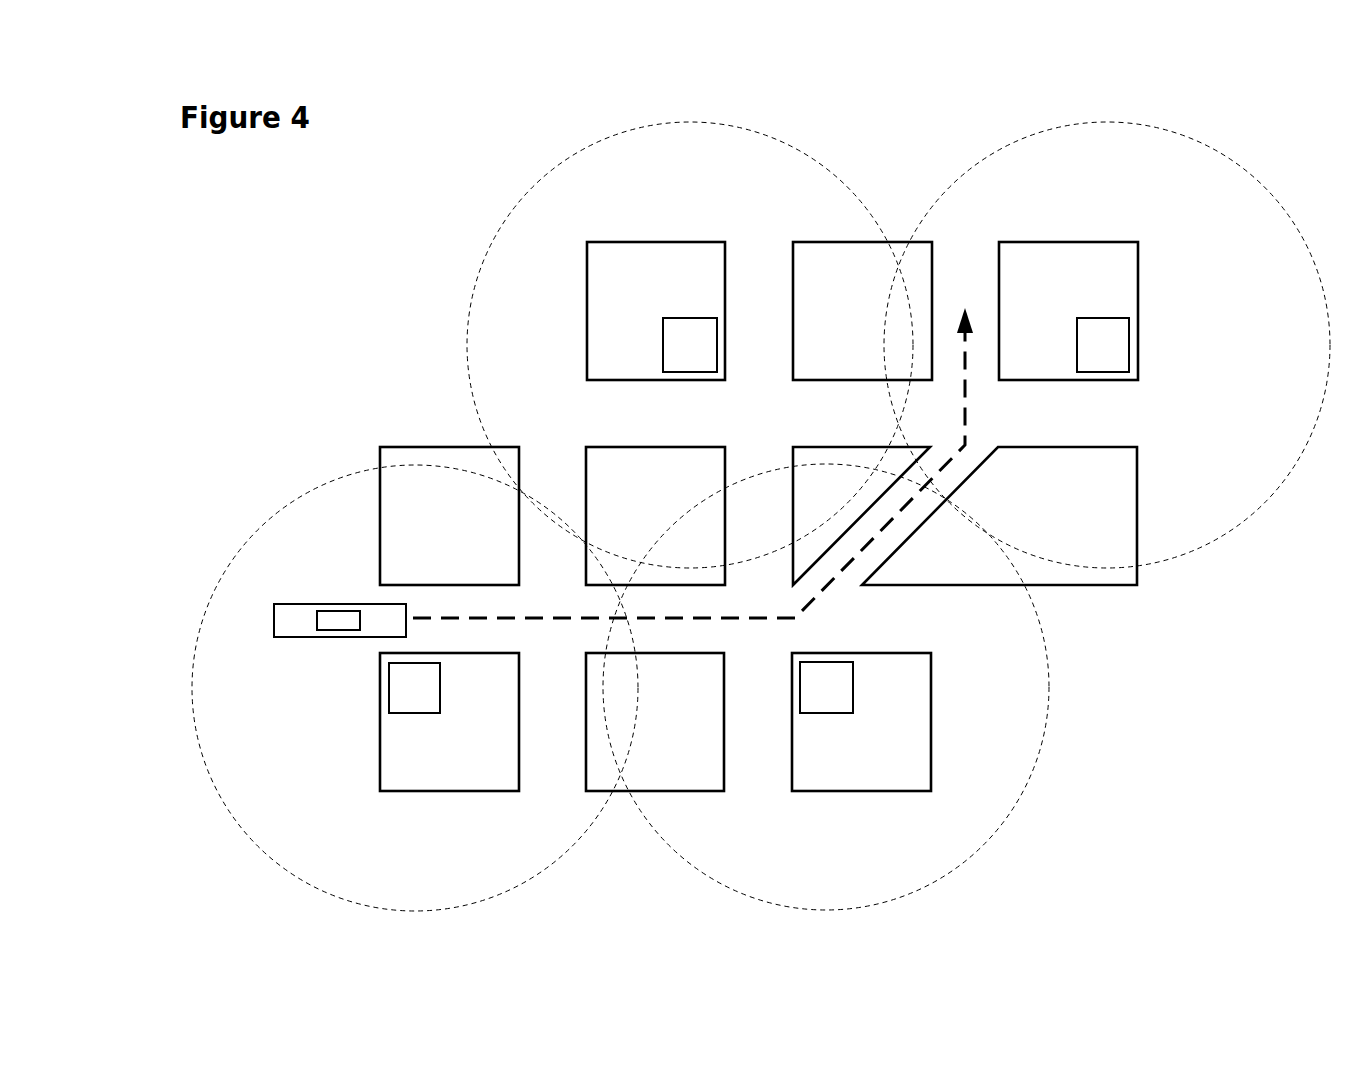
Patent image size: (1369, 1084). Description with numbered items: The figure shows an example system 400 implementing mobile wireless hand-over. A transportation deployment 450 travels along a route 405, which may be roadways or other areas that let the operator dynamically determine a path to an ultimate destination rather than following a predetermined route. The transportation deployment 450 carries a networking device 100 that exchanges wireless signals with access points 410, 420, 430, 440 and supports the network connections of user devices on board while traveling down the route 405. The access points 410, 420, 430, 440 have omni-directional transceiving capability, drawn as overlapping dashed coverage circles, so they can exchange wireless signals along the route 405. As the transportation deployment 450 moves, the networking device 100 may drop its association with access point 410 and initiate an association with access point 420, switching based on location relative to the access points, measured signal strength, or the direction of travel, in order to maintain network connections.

The transportation network deployment environment 400 is at (280, 316).
The route 405 is at (817, 592).
The access point 410 is at (417, 714).
The access point 420 is at (827, 713).
The access point 430 is at (682, 317).
The access point 440 is at (1102, 317).
The transportation deployment 450 is at (327, 607).
The networking device 100 is at (333, 628).